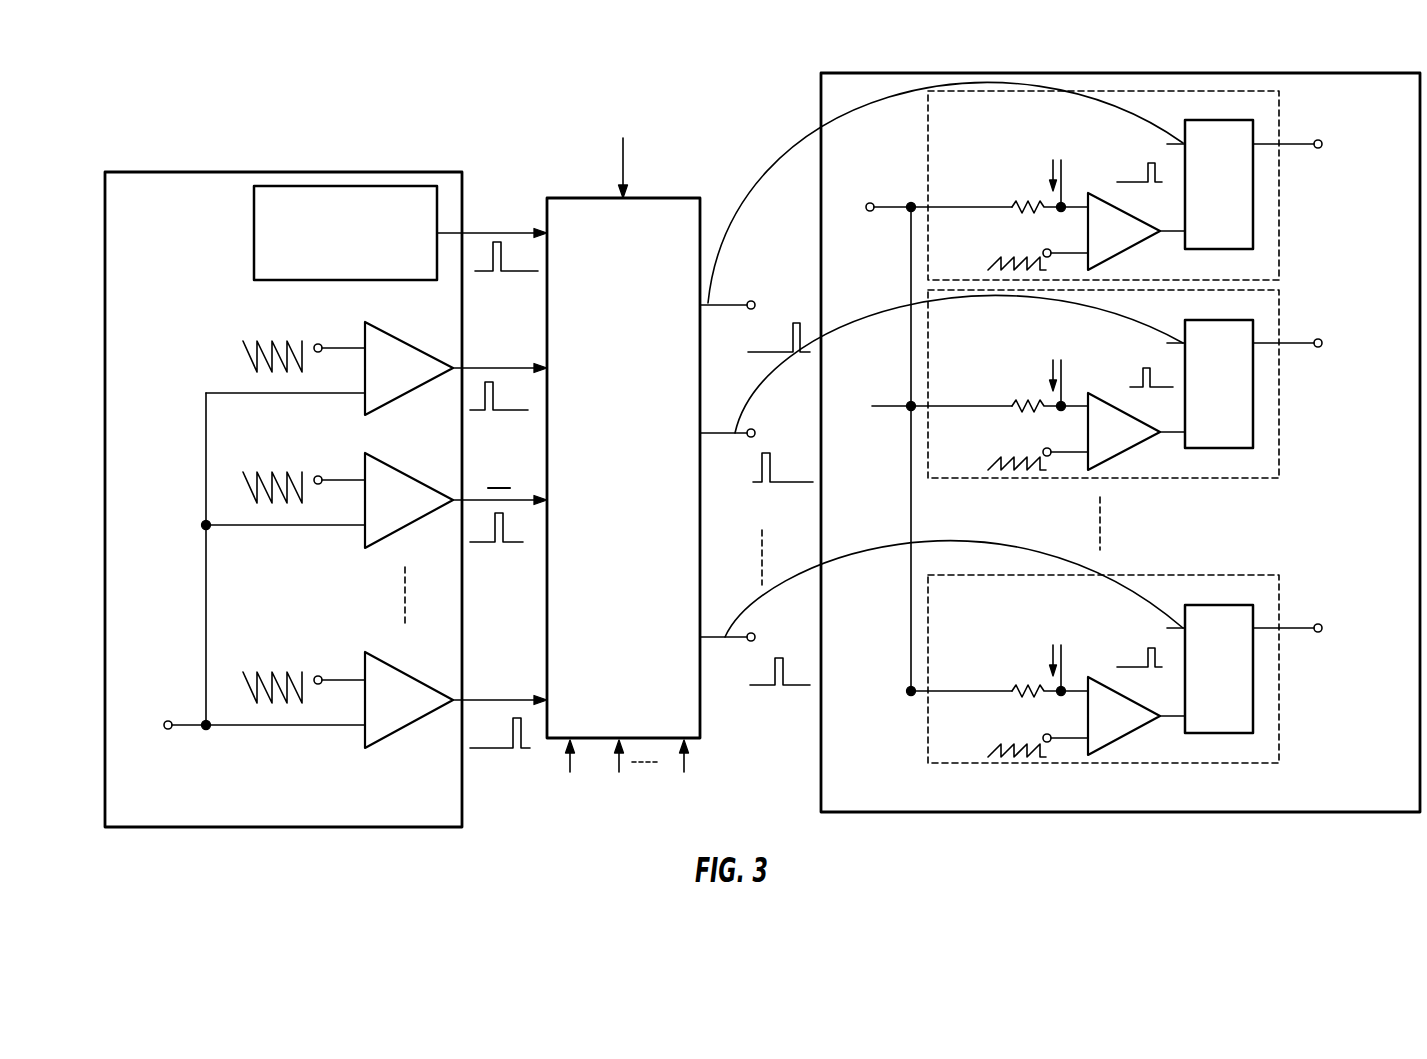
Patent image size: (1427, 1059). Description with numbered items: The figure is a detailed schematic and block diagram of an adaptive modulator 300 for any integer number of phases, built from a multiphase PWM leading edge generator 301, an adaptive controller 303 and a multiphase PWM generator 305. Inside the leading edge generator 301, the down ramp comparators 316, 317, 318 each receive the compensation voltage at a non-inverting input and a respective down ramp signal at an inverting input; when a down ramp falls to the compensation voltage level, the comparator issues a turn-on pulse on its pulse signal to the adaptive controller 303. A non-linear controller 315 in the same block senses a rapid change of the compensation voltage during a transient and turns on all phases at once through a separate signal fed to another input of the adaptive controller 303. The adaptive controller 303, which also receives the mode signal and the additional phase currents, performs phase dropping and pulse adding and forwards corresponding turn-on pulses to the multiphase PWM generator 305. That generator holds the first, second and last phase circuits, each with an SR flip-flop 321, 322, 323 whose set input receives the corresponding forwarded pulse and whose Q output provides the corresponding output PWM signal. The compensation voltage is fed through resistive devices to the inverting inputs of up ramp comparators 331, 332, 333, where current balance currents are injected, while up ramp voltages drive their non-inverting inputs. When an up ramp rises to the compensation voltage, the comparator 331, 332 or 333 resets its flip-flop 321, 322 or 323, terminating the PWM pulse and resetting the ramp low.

The adaptive modulator 300 is at (307, 881).
The multiphase PWM leading edge generator 301 is at (188, 249).
The adaptive controller 303 is at (634, 279).
The multiphase PWM generator 305 is at (890, 777).
The non-linear controller 315 is at (333, 186).
The down ramp comparator 316 is at (410, 358).
The down ramp comparator 317 is at (410, 490).
The down ramp comparator 318 is at (410, 690).
The SR flip-flop 321 is at (1243, 130).
The SR flip-flop 322 is at (1253, 433).
The SR flip-flop 323 is at (1253, 705).
The up ramp comparator 331 is at (1108, 195).
The up ramp comparator 332 is at (1120, 436).
The up ramp comparator 333 is at (1138, 718).